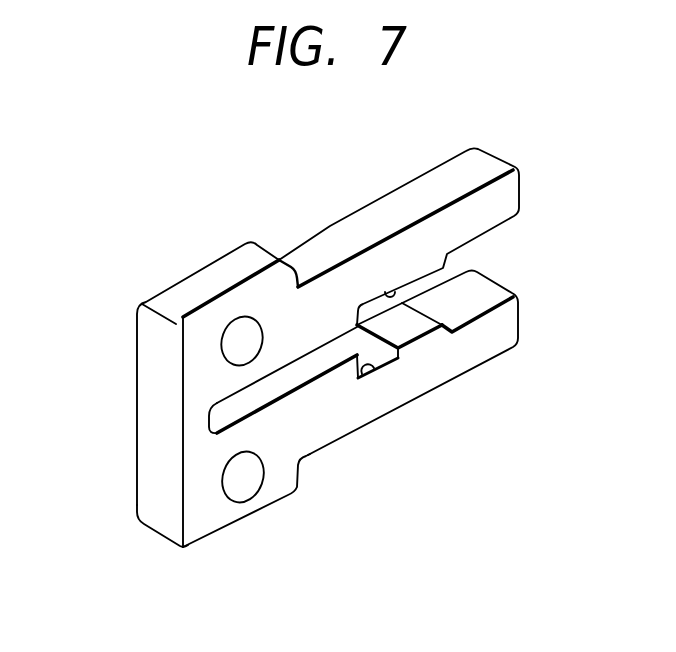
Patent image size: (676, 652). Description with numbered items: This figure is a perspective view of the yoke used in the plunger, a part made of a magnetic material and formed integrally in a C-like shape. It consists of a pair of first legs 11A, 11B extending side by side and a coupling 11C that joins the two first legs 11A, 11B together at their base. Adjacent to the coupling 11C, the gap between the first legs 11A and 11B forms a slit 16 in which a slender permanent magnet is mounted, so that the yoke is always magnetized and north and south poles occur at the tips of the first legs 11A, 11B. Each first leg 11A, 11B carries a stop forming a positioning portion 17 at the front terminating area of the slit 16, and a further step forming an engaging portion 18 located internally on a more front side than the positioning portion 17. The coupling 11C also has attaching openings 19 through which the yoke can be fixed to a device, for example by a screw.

The first leg 11A is at (458, 213).
The first leg 11B is at (447, 360).
The coupling 11C is at (193, 432).
The slit 16 is at (287, 380).
The positioning portion 17 is at (359, 303).
The engaging portion 18 is at (387, 292).
The hole 19 is at (235, 338).